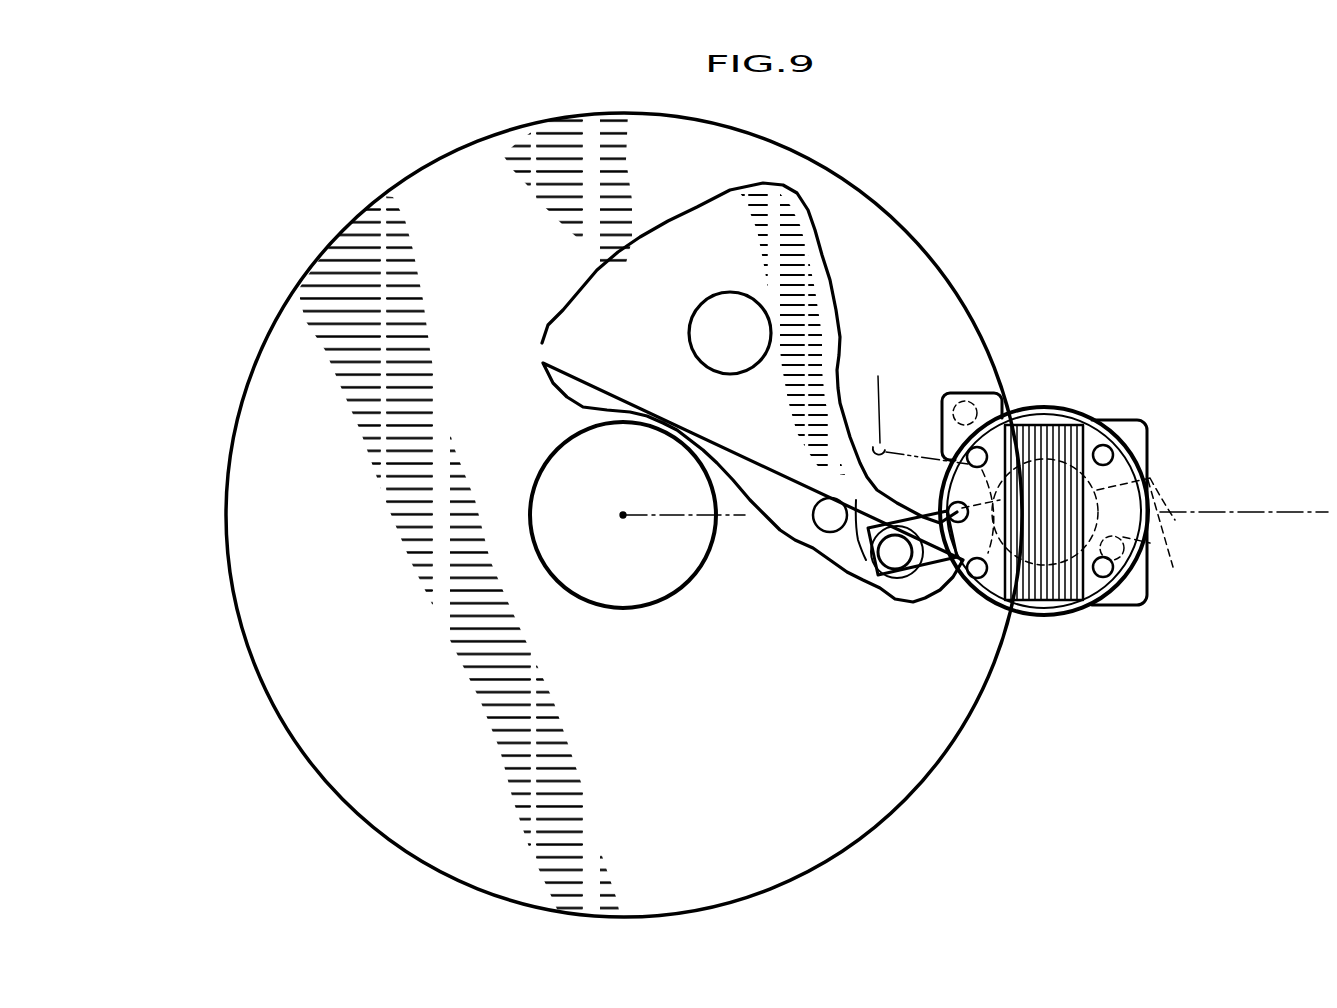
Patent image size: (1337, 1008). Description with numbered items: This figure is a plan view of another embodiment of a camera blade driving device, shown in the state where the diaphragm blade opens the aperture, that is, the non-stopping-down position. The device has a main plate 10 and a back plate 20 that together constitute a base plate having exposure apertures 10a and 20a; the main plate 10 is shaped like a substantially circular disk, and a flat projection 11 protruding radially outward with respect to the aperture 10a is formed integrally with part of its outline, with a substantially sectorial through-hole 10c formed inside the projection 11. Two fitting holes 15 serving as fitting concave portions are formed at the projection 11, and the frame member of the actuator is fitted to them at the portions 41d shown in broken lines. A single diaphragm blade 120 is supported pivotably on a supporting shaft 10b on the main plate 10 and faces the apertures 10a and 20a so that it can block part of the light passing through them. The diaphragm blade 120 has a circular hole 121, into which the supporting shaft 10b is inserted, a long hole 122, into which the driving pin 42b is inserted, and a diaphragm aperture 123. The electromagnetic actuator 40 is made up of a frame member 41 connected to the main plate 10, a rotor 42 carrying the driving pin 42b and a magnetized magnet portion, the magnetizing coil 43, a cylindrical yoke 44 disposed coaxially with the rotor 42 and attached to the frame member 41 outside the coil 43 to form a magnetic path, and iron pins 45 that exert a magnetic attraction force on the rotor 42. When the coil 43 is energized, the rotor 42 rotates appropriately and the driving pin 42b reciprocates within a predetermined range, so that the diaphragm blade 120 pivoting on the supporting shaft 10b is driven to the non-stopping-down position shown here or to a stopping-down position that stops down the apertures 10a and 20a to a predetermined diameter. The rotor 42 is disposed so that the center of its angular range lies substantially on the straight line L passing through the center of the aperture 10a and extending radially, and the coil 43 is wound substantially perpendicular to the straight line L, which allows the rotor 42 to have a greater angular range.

The main plate 10 is at (624, 514).
The back plate 20 is at (903, 230).
The exposure aperture 10a is at (637, 515).
The exposure aperture 20a is at (538, 497).
The supporting shaft 10b is at (817, 518).
The through-hole 10c is at (913, 405).
The projection 11 is at (1143, 423).
The fitting hole 15 is at (965, 400).
The electromagnetic actuator 40 is at (1052, 402).
The frame member 41 is at (1130, 520).
The shaft hole 41d is at (1107, 440).
The rotor 42 is at (1150, 478).
The driving pin 42b is at (900, 560).
The coil 43 is at (1100, 403).
The yoke 44 is at (1143, 448).
The iron pin 45 is at (962, 452).
The diaphragm blade 120 is at (814, 220).
The circular hole 121 is at (824, 533).
The long hole 122 is at (872, 565).
The diaphragm aperture 123 is at (718, 300).
The straight line L is at (1283, 503).